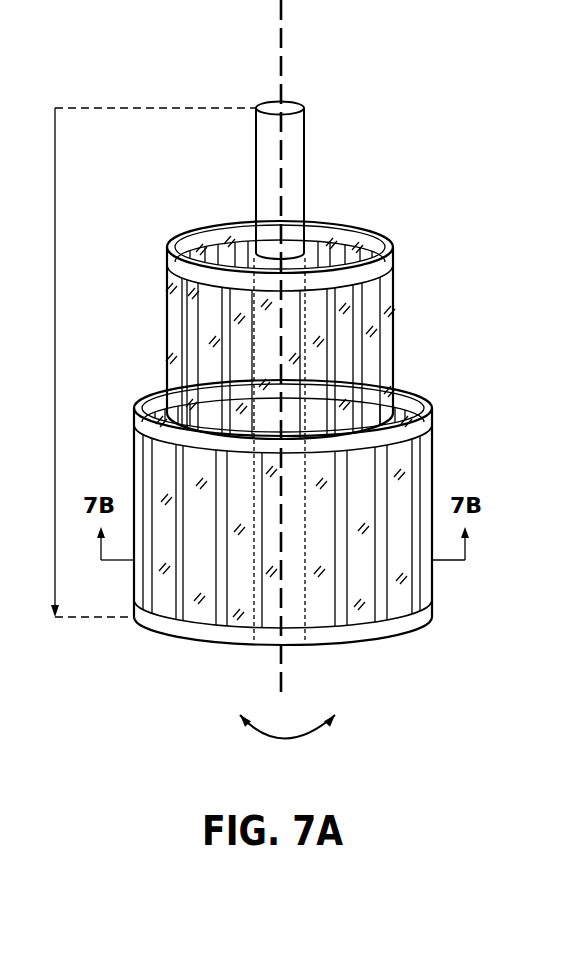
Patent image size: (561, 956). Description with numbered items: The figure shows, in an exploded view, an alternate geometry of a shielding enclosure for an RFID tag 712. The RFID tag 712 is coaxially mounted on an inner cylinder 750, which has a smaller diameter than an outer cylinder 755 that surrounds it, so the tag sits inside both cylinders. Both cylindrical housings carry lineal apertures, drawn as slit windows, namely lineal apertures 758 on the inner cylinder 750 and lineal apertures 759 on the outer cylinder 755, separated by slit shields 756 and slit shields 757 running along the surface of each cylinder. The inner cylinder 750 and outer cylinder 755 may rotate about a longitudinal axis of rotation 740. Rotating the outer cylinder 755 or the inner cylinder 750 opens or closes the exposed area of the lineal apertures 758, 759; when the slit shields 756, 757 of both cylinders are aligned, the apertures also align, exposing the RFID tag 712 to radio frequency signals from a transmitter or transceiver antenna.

The longitudinal axis of rotation 740 is at (328, 350).
The RFID tag 712 is at (307, 106).
The inner cylinder 750 is at (323, 316).
The slit shields 756 is at (336, 349).
The lineal apertures 758 is at (330, 348).
The outer cylinder 755 is at (433, 402).
The slit shields 757 is at (331, 519).
The lineal apertures 759 is at (338, 538).